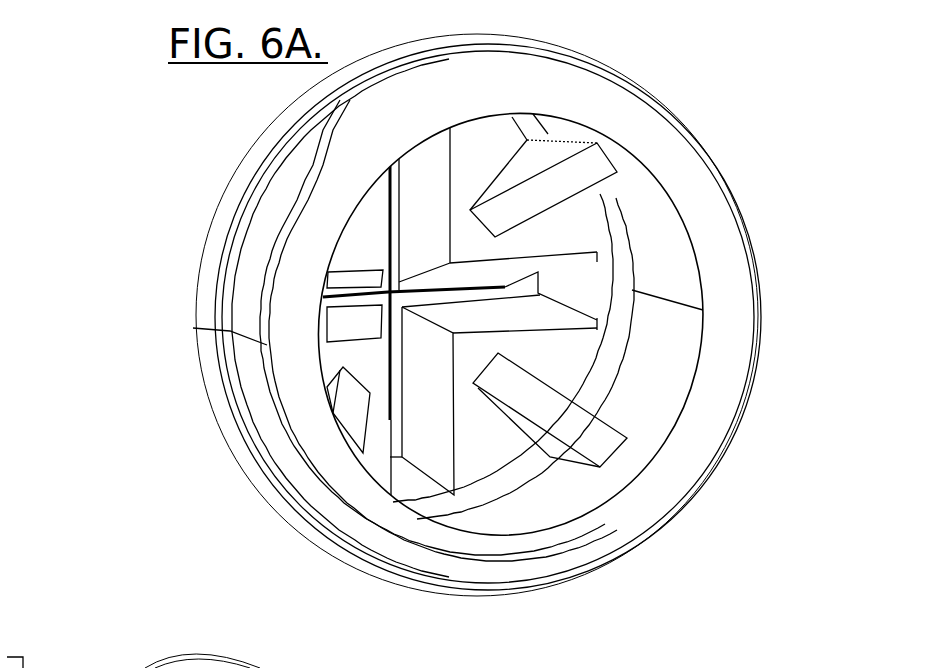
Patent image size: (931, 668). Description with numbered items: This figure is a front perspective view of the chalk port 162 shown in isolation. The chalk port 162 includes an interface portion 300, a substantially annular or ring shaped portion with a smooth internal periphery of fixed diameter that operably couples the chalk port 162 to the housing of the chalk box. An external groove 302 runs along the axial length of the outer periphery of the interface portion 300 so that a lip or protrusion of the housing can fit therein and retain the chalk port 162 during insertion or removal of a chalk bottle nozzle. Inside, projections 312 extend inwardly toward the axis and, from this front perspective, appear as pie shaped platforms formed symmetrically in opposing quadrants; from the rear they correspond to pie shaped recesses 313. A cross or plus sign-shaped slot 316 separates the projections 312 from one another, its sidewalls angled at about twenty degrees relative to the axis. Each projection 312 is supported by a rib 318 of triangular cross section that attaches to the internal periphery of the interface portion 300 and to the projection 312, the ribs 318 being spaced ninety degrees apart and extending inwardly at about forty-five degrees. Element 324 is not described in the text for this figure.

The chalk port 162 is at (128, 104).
The interface portion 300 is at (477, 346).
The external groove 302 is at (425, 324).
The projections 312 is at (371, 364).
The pie shaped recesses 313 is at (104, 648).
The slot 316 is at (530, 401).
The ribs 318 is at (511, 350).
The rim 324 is at (202, 641).